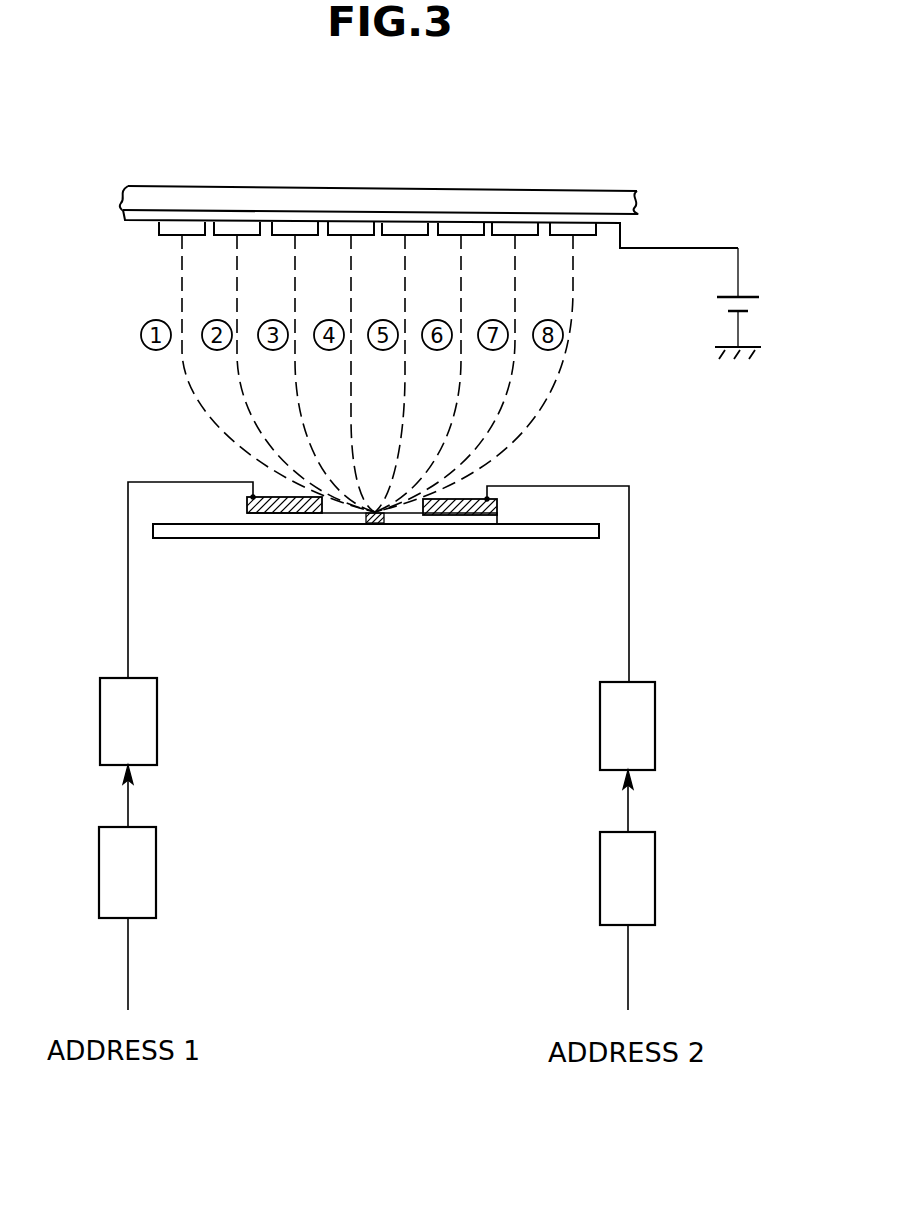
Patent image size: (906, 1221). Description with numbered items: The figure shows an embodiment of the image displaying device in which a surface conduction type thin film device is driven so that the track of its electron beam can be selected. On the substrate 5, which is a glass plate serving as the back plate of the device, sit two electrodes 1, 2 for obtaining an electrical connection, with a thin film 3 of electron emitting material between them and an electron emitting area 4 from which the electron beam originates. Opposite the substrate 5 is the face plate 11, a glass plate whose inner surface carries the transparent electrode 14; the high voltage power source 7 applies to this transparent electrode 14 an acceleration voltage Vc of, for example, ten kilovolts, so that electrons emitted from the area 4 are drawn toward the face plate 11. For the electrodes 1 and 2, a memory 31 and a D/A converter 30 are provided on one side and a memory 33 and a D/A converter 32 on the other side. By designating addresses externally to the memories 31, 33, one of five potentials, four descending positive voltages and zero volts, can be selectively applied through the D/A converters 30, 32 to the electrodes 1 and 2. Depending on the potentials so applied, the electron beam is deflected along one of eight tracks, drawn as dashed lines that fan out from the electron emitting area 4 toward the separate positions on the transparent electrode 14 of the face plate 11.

The face plate 11 is at (578, 189).
The transparent electrode 14 is at (123, 215).
The high voltage power source 7 is at (747, 293).
The electrode 1 is at (246, 507).
The electrode 2 is at (498, 507).
The thin film 3 is at (415, 517).
The electron emitting area 4 is at (376, 538).
The substrate 5 is at (283, 538).
The D/A converter 30 is at (157, 710).
The memory 31 is at (156, 858).
The D/A converter 32 is at (600, 710).
The memory 33 is at (600, 862).